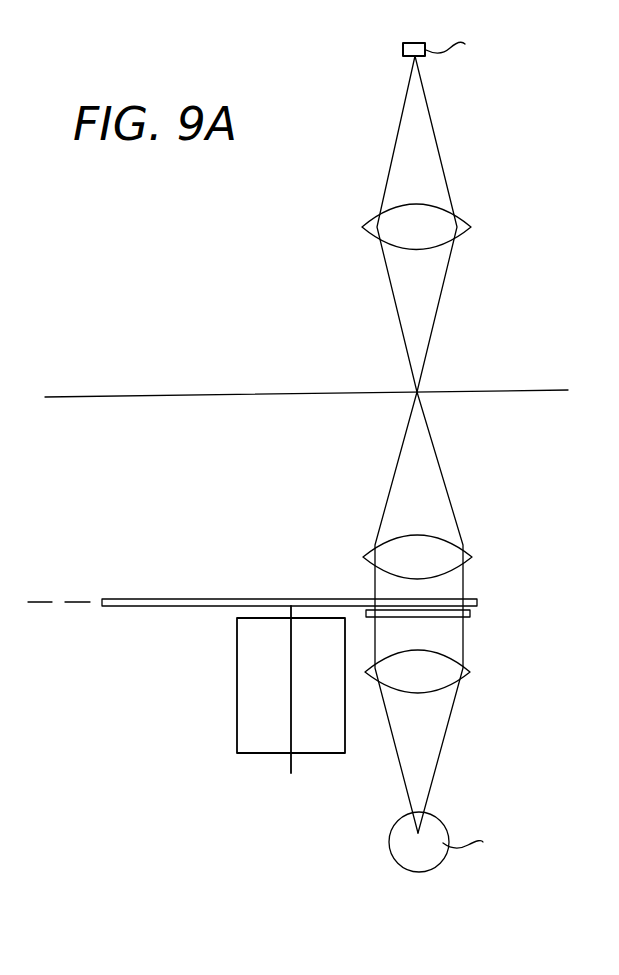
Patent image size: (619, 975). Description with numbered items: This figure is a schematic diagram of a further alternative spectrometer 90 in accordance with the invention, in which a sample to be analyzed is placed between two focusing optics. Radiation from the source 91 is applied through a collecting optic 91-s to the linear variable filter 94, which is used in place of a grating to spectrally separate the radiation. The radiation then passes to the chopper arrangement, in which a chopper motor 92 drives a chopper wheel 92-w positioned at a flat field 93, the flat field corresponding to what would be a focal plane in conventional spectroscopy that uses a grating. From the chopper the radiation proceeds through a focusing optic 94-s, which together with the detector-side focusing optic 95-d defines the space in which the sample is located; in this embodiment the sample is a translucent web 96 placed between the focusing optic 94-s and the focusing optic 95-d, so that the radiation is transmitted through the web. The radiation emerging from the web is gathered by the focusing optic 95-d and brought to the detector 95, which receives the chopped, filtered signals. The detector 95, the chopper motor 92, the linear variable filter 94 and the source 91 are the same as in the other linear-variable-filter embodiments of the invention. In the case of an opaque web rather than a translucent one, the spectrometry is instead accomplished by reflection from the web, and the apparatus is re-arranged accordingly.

The spectrometer system 90 is at (138, 252).
The source 91 is at (398, 848).
The collecting optic 91-s is at (468, 673).
The chopper motor 92 is at (247, 707).
The chopper wheel 92-w is at (176, 599).
The flat field 93 is at (71, 603).
The linear variable filter 94 is at (393, 608).
The focusing optic 94-s is at (471, 558).
The detector 95 is at (403, 50).
The focusing optic 95-d is at (471, 227).
The translucent web 96 is at (222, 393).